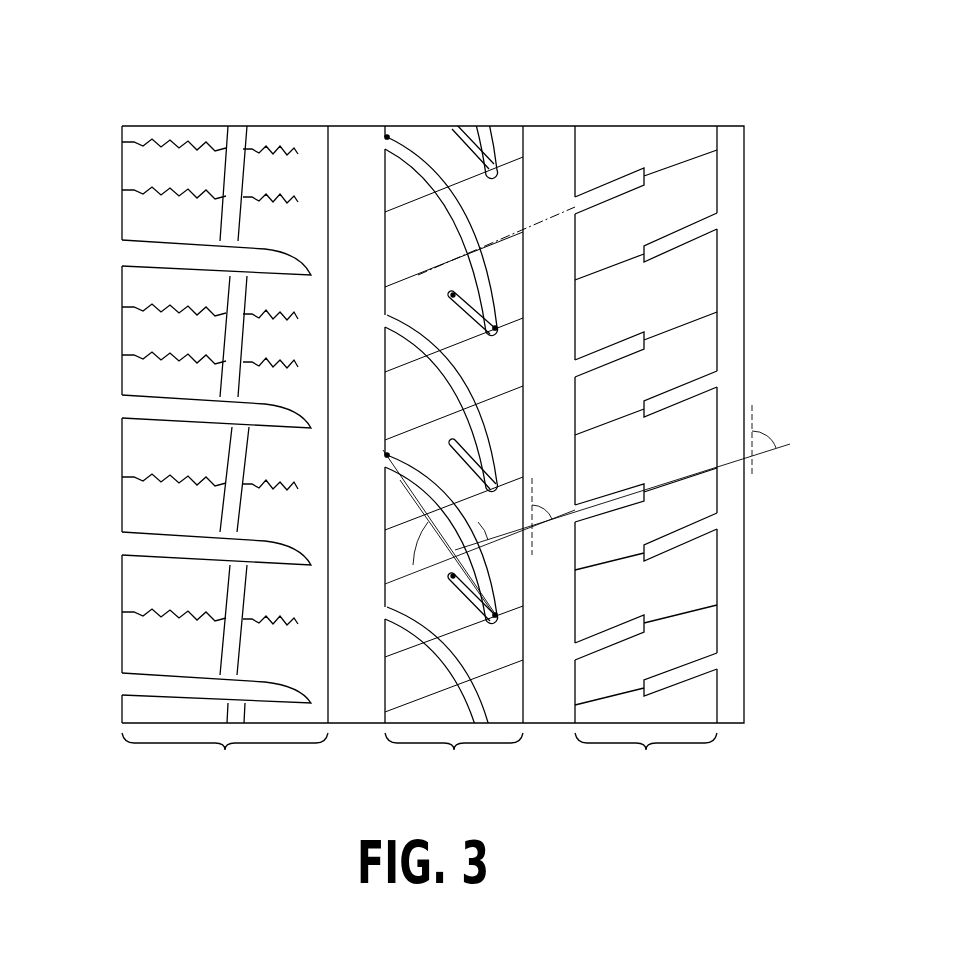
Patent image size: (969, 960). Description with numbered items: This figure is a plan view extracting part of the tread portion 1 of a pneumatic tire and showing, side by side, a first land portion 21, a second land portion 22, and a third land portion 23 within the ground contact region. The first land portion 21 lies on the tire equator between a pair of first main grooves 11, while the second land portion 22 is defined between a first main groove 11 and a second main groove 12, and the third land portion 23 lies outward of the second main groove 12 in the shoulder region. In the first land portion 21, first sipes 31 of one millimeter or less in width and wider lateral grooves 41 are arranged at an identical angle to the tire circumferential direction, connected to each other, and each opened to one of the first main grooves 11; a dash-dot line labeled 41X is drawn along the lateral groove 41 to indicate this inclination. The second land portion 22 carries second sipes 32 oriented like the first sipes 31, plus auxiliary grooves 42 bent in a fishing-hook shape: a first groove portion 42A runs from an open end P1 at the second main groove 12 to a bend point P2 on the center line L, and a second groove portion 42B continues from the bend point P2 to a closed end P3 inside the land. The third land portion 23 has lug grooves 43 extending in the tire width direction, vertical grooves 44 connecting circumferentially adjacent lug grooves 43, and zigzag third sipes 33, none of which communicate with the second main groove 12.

The tread portion 1 is at (699, 125).
The first main groove 11 is at (557, 137).
The second main groove 12 is at (345, 142).
The first land portion 21 is at (622, 421).
The second land portion 22 is at (456, 391).
The third land portion 23 is at (191, 454).
The first sipe 31 is at (683, 157).
The second sipe 32 is at (403, 653).
The third sipe 33 is at (167, 609).
The lateral groove 41 is at (605, 182).
The extension line of lateral groove 41X is at (530, 220).
The auxiliary groove 42 is at (434, 162).
The first groove portion 42A is at (463, 222).
The second groove portion 42B is at (425, 322).
The lug groove 43 is at (177, 418).
The vertical groove 44 is at (227, 228).
The open end P1 is at (390, 133).
The bend point P2 is at (497, 325).
The closed end P3 is at (451, 295).
The center line L is at (466, 208).